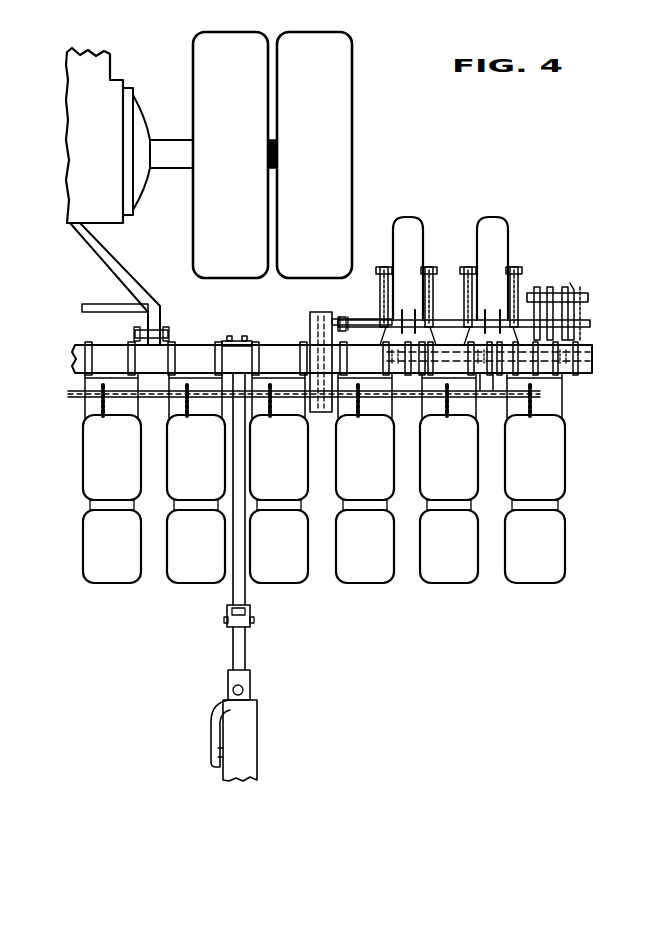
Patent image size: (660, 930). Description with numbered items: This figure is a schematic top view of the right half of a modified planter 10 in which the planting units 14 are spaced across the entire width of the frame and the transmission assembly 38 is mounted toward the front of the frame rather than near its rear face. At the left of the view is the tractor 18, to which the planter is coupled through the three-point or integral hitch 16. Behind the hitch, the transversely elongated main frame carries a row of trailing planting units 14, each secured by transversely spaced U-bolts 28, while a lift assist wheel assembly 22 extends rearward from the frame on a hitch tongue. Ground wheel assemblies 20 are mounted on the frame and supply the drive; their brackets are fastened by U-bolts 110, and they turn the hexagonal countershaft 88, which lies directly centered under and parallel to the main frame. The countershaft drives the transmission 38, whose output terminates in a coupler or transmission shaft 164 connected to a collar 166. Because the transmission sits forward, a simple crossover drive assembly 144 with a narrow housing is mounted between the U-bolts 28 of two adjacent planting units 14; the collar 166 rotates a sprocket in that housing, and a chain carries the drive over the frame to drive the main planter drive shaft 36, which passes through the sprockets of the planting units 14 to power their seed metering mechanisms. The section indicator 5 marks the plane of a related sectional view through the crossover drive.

The planter 10 is at (401, 605).
The planting units 14 is at (538, 458).
The hitch 16 is at (160, 320).
The tractor 18 is at (100, 72).
The ground wheel assemblies 20 is at (424, 211).
The lift assist wheel assemblies 22 is at (213, 680).
The U-bolts 28 is at (219, 346).
The main planter drive shaft 36 is at (383, 399).
The transmission assembly 38 is at (556, 277).
The countershaft 88 is at (592, 353).
The U-bolts 110 is at (497, 374).
The crossover drive assembly 144 is at (309, 314).
The transmission shaft 164 is at (445, 323).
The collar 166 is at (350, 322).
The section line 5- 5 is at (292, 300).